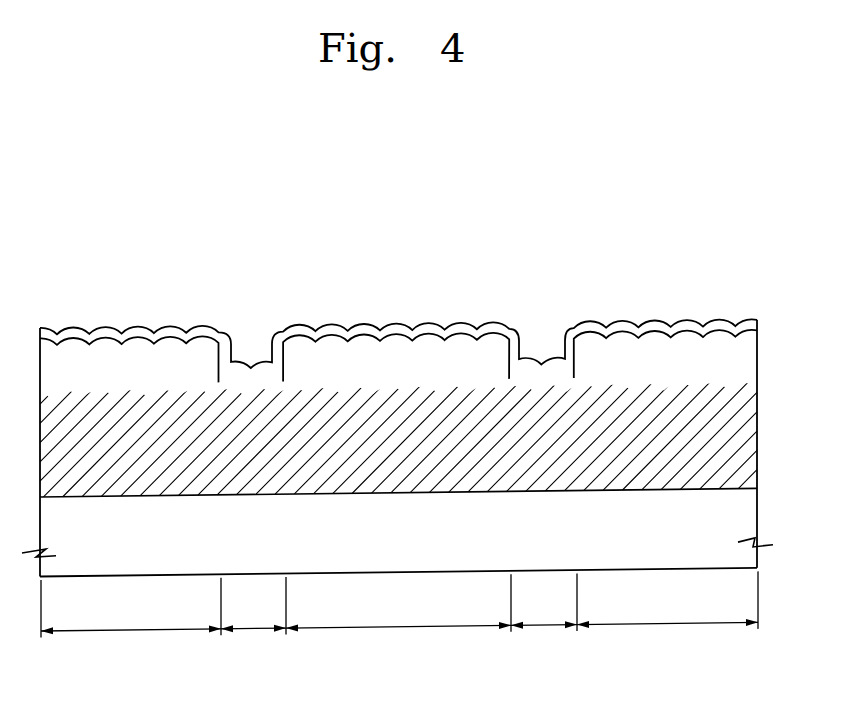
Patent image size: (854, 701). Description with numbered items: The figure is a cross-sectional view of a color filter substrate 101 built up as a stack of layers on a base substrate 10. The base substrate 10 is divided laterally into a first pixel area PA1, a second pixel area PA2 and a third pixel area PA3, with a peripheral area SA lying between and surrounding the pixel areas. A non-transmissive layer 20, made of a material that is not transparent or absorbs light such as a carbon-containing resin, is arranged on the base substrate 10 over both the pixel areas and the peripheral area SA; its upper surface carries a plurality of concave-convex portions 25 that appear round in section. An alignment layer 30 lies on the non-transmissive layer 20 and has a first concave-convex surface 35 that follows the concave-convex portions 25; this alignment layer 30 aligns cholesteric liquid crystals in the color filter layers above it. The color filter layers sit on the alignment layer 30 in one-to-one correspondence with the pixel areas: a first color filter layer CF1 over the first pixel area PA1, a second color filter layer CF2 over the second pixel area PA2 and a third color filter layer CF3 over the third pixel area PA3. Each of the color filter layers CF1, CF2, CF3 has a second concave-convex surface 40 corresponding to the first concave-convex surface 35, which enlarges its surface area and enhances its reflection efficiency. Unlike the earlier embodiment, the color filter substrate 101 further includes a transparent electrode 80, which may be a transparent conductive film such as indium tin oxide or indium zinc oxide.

The color filter substrate 101 is at (409, 381).
The base substrate 10 is at (738, 527).
The non-transmissive layer 20 is at (752, 435).
The concave-convex portions 25 is at (752, 383).
The alignment layer 30 is at (717, 386).
The first concave-convex surface 35 is at (422, 320).
The second concave-convex surface 40 is at (725, 336).
The transparent electrode 80 is at (422, 313).
The first color filter layer CF1 is at (167, 354).
The second color filter layer CF2 is at (430, 353).
The third color filter layer CF3 is at (627, 350).
The first pixel area PA1 is at (131, 621).
The second pixel area PA2 is at (398, 617).
The third pixel area PA3 is at (667, 614).
The peripheral area SA is at (399, 618).